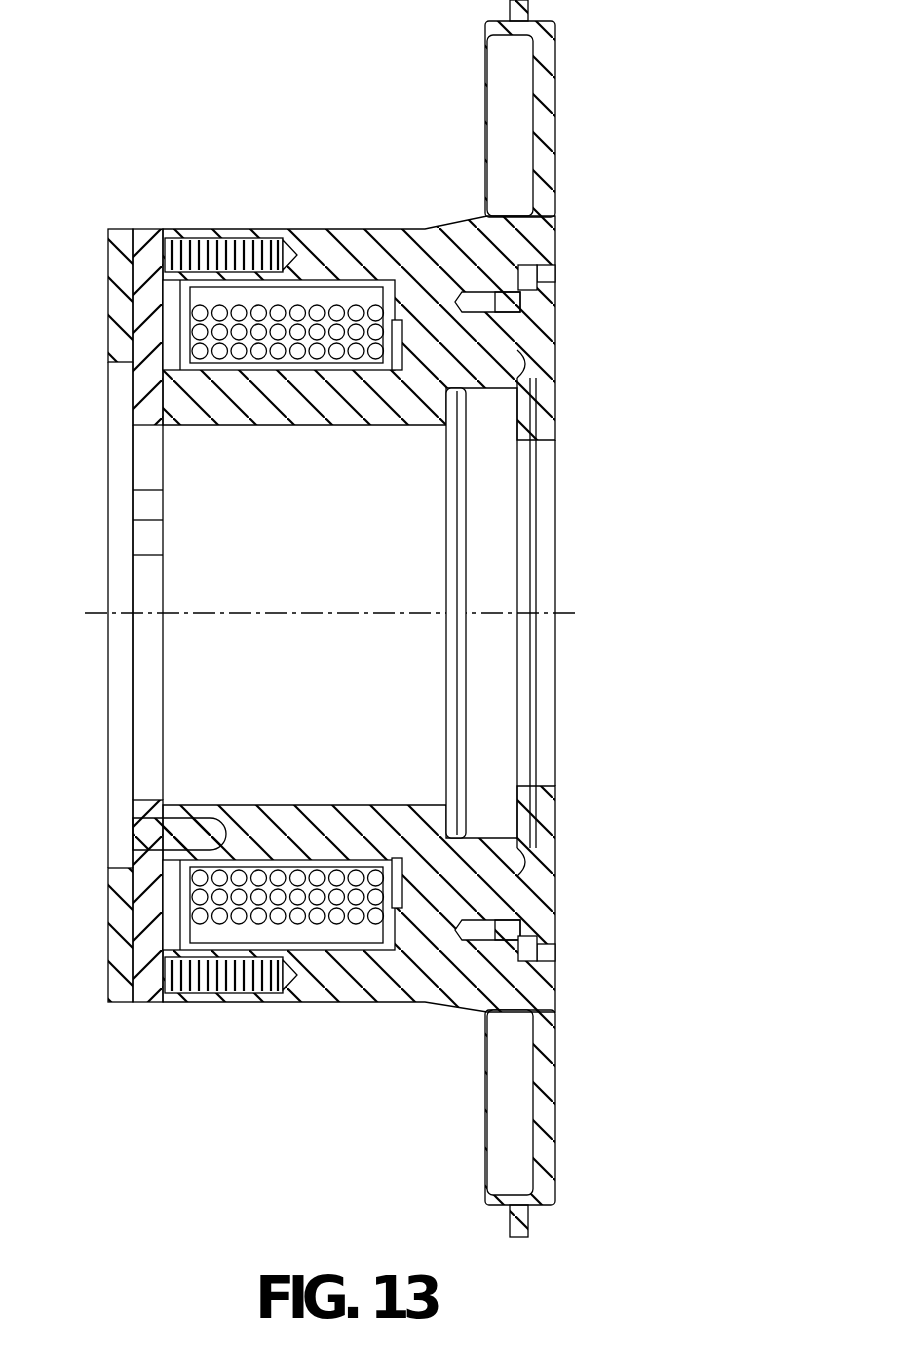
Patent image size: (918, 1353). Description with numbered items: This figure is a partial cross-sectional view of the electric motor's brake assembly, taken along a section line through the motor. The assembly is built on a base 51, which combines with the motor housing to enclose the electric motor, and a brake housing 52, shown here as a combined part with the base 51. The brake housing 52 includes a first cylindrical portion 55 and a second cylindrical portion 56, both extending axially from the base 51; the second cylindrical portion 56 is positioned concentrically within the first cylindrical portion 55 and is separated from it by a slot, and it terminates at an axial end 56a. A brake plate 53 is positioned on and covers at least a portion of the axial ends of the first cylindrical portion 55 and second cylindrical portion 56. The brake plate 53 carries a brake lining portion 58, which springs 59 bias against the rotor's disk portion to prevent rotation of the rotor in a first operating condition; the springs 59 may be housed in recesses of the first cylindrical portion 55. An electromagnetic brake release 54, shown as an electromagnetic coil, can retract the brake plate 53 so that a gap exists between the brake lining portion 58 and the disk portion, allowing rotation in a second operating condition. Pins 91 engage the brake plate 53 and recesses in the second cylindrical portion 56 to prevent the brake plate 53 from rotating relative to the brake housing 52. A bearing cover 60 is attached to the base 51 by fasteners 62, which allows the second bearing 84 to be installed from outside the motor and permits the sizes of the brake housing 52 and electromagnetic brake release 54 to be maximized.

The base 51 is at (548, 1137).
The brake housing 52 is at (335, 618).
The brake plate 53 is at (138, 405).
The electromagnetic brake release 54 is at (328, 942).
The first cylindrical portion 55 is at (359, 616).
The second cylindrical portion 56 is at (278, 822).
The axial end 56a is at (180, 405).
The brake lining portion 58 is at (128, 322).
The springs 59 is at (228, 242).
The bearing cover 60 is at (545, 392).
The fasteners 62 is at (548, 940).
The second bearing 84 is at (480, 425).
The pins 91 is at (150, 830).